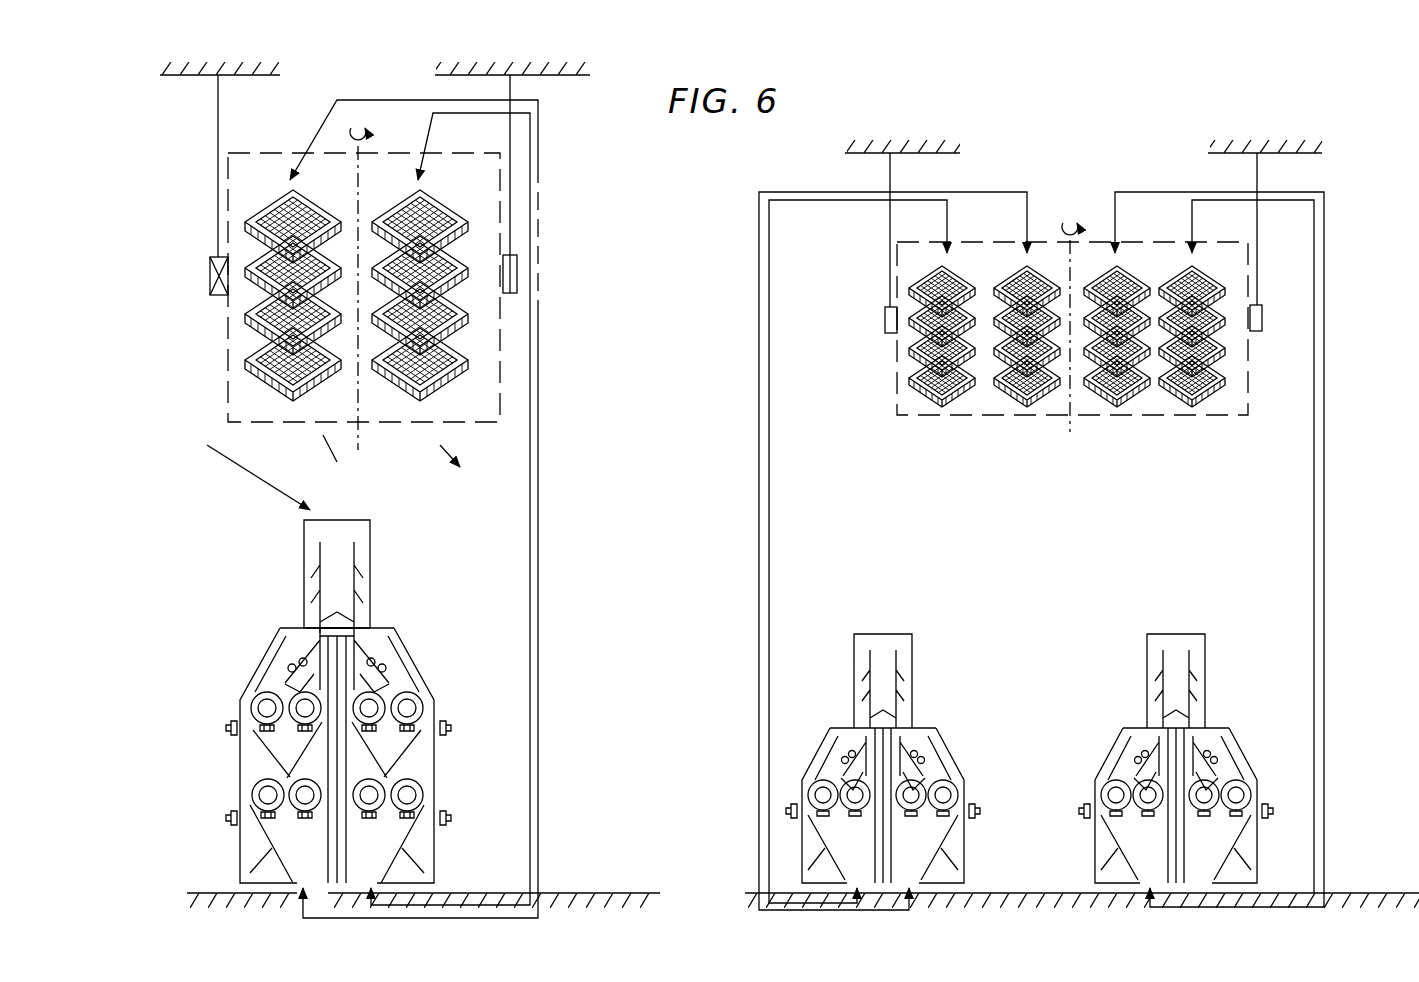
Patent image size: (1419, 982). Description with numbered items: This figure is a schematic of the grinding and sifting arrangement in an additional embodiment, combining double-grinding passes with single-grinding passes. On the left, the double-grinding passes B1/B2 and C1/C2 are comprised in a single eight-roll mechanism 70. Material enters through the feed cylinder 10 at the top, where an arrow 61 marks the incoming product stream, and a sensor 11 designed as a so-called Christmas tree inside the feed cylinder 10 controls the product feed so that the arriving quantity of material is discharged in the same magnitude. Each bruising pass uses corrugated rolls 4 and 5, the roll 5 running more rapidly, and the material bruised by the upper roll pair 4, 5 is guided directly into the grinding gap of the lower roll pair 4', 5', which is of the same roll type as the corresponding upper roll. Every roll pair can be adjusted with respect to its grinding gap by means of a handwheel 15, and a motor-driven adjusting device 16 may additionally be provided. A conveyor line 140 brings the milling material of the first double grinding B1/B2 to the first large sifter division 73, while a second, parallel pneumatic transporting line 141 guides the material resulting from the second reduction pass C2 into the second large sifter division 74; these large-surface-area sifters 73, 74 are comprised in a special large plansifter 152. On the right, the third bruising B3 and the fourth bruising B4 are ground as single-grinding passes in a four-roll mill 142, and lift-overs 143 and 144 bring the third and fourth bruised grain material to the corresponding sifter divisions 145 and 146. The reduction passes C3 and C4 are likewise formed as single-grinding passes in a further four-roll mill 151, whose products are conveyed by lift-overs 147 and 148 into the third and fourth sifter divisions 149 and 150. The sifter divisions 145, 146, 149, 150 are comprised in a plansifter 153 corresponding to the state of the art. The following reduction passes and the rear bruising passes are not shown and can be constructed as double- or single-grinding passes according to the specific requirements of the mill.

The corrugated roll 4 is at (235, 745).
The corrugated roll 5 is at (215, 721).
The lower roll 4' is at (236, 826).
The lower roll 5' is at (217, 809).
The feed cylinder 10 is at (357, 558).
The sensor 11 is at (313, 585).
The handwheel 15 is at (453, 731).
The motor-driven adjusting device 16 is at (283, 878).
The transfer direction arrow 61 is at (246, 470).
The eight-roll mechanism 70 is at (243, 628).
The first large sifter division 73 is at (303, 197).
The second large sifter division 74 is at (449, 195).
The conveyor line 140 is at (530, 583).
The return pipe 141 is at (540, 563).
The four-roll mill 142 is at (940, 702).
The lift-over 143 is at (769, 517).
The lift-over 144 is at (759, 498).
The sifter division 145 is at (930, 395).
The sifter division 146 is at (1041, 394).
The lift-over 147 is at (1310, 504).
The lift-over 148 is at (1322, 502).
The third sifter division 149 is at (1128, 395).
The fourth sifter division 150 is at (1205, 397).
The four-roll mill 151 is at (1129, 704).
The large plansifter 152 is at (226, 334).
The plansifter 153 is at (897, 365).
The first bruising pass B1 is at (234, 745).
The second bruising pass B2 is at (235, 826).
The third bruising pass B3 is at (819, 781).
The fourth bruising pass B4 is at (953, 788).
The first reduction pass C1 is at (424, 711).
The second reduction pass C2 is at (423, 798).
The third reduction pass C3 is at (1108, 786).
The fourth reduction pass C4 is at (1246, 787).